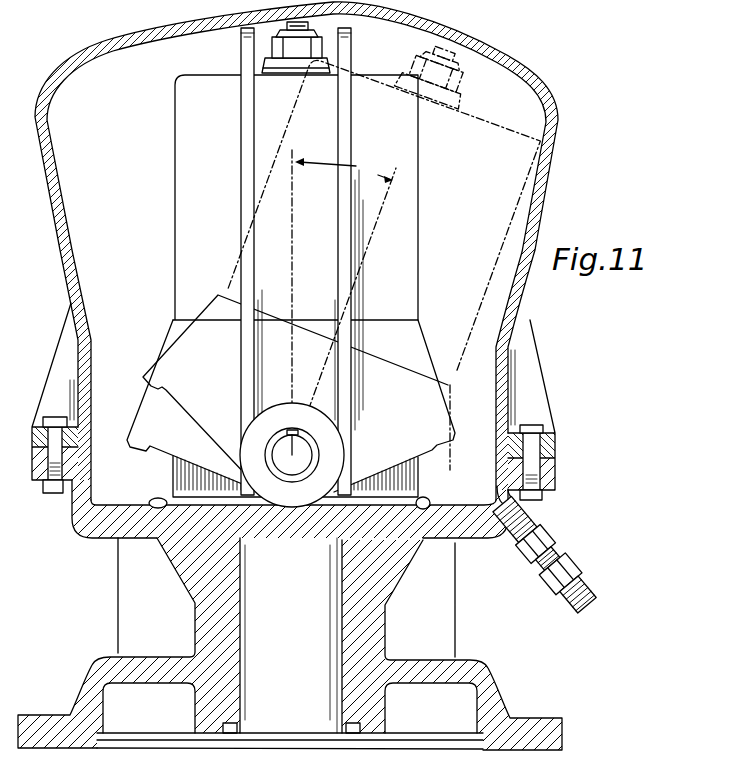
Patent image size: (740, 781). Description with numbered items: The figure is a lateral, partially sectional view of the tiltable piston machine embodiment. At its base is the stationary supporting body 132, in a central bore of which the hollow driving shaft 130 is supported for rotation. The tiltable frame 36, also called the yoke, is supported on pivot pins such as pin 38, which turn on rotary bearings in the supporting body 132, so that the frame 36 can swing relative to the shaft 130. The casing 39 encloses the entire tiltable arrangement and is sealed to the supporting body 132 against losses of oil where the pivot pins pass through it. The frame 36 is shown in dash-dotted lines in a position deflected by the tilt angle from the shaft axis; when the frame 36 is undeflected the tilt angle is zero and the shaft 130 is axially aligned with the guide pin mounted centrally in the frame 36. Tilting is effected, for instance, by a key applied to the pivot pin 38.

The casing 39 is at (107, 40).
The tiltable frame 36 is at (176, 98).
The pivot pin 38 is at (304, 447).
The hollow driving shaft 130 is at (305, 727).
The stationary supporting body 132 is at (98, 526).